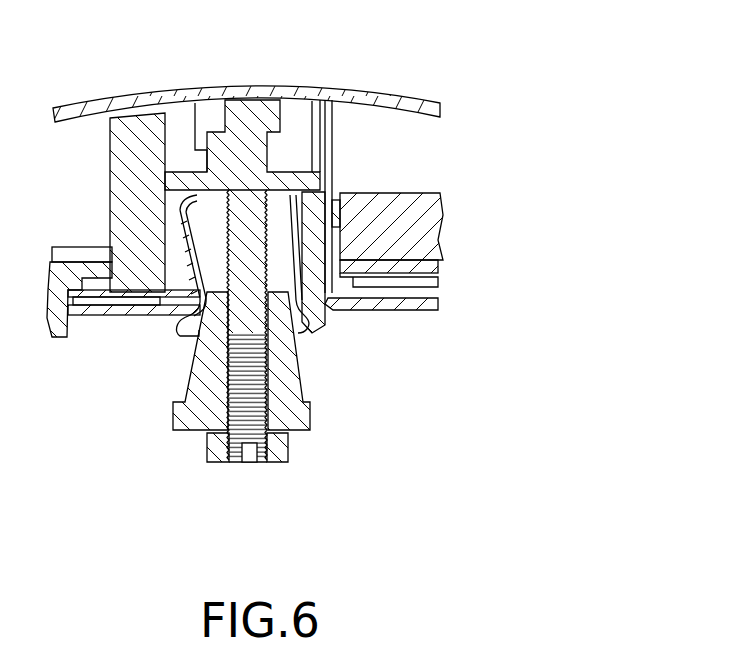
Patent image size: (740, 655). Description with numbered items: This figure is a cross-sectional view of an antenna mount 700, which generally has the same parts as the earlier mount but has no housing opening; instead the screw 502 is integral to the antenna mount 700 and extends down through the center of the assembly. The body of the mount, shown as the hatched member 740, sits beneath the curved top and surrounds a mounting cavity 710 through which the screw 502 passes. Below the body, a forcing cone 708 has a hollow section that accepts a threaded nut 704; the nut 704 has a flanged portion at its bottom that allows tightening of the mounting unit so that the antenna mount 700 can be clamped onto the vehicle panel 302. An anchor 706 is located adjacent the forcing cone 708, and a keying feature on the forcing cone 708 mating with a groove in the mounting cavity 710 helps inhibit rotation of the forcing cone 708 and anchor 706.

The housing body 740 is at (140, 124).
The screw 502 is at (257, 110).
The mounting cavity 710 is at (177, 260).
The vehicle panel 302 is at (100, 313).
The anchor 706 is at (197, 320).
The forcing cone 708 is at (300, 367).
The threaded nut 704 is at (207, 455).
The antenna mount 700 is at (535, 315).